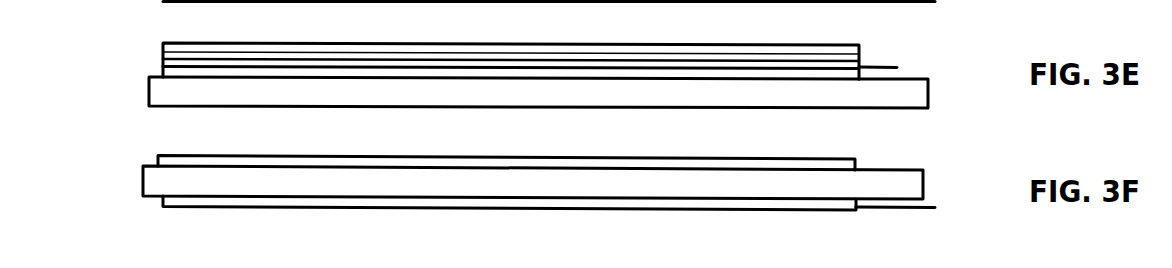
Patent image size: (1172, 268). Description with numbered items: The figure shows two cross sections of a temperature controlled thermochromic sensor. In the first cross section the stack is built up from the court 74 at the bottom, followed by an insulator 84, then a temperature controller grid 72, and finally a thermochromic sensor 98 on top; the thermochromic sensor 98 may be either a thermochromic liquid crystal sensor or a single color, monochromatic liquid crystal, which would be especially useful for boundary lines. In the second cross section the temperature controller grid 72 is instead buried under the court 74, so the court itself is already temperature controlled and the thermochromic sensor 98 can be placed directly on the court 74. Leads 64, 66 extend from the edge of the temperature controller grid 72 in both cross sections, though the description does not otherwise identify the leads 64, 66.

In FIG. 3E, the electrical lead 64 is at (930, 43).
In FIG. 3F, the electrical lead 64 is at (921, 233).
In FIG. 3E, the electrical lead 66 is at (883, 67).
In FIG. 3F, the electrical lead 66 is at (893, 212).
In FIG. 3E, the substrate 72 is at (172, 62).
In FIG. 3F, the substrate 72 is at (185, 200).
In FIG. 3E, the carrier plate 74 is at (913, 95).
In FIG. 3F, the carrier plate 74 is at (907, 185).
In FIG. 3E, the intermediate layer 84 is at (172, 71).
In FIG. 3E, the film layer 98 is at (414, 52).
In FIG. 3F, the film layer 98 is at (400, 163).